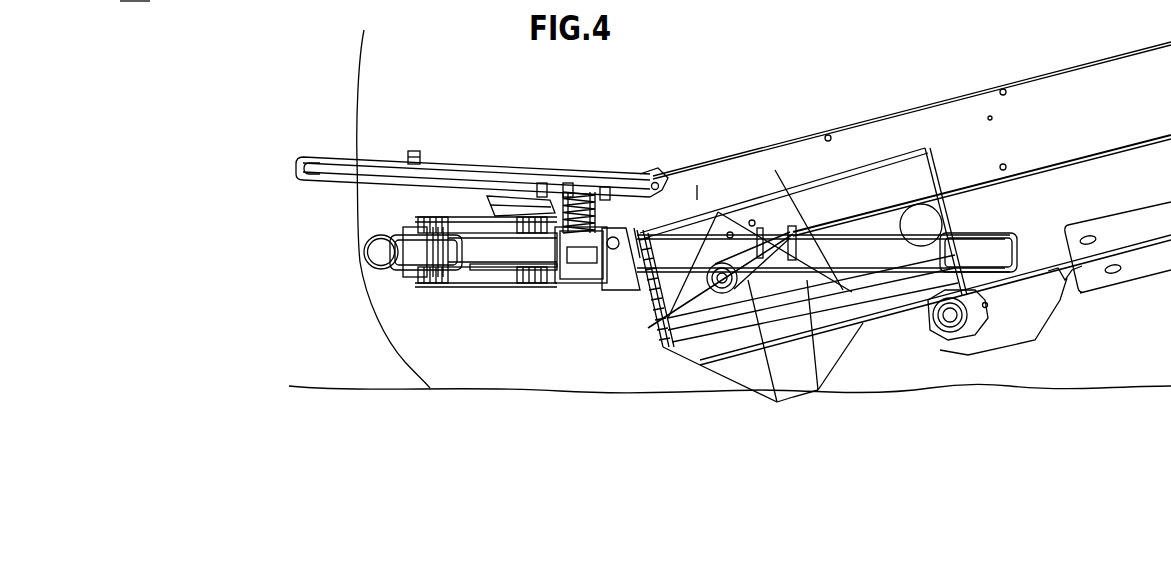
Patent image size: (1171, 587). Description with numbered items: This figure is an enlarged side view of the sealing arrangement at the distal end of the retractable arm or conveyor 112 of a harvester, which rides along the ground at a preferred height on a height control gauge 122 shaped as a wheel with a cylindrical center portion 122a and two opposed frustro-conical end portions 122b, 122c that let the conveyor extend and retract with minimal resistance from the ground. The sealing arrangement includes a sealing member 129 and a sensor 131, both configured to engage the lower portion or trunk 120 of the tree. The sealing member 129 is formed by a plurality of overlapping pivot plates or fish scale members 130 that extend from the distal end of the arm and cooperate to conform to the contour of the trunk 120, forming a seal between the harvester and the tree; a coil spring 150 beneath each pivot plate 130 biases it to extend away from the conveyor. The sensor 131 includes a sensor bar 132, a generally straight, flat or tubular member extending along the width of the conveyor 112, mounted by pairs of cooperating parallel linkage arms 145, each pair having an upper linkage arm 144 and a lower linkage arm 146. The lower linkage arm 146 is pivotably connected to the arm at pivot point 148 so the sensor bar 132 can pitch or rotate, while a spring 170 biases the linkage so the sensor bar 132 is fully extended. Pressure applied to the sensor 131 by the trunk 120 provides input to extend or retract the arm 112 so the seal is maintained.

The retractable arm or conveyor 112 is at (1023, 195).
The lower portion or trunk of the tree 120 is at (350, 83).
The height control gauge 122 is at (828, 401).
The cylindrical center portion 122a is at (793, 390).
The frustro-conical end portion 122b is at (827, 361).
The frustro-conical end portion 122c is at (747, 370).
The sealing member 129 is at (414, 132).
The overlapping pivot plates or fish scale members 130 is at (460, 160).
The sensor 131 is at (386, 305).
The sensor bar 132 is at (380, 234).
The upper linkage arm 144 is at (470, 217).
The cooperating parallel linkage arms 145 is at (469, 304).
The lower linkage arm 146 is at (488, 287).
The pivot point 148 is at (612, 250).
The coil spring 150 is at (586, 200).
The spring 170 is at (522, 270).